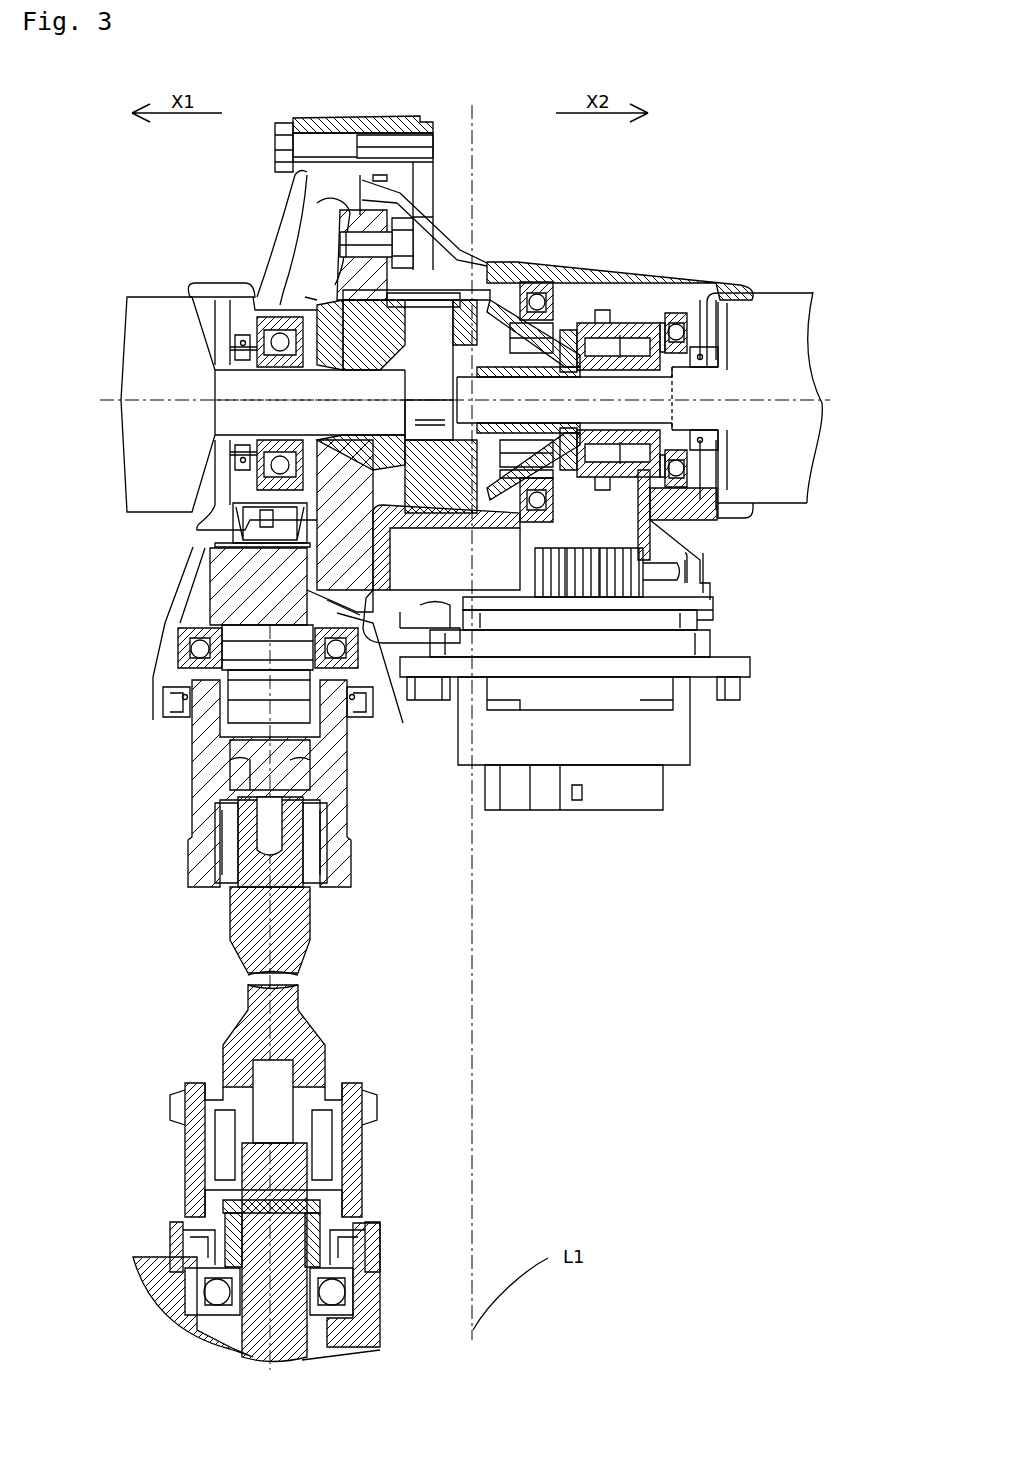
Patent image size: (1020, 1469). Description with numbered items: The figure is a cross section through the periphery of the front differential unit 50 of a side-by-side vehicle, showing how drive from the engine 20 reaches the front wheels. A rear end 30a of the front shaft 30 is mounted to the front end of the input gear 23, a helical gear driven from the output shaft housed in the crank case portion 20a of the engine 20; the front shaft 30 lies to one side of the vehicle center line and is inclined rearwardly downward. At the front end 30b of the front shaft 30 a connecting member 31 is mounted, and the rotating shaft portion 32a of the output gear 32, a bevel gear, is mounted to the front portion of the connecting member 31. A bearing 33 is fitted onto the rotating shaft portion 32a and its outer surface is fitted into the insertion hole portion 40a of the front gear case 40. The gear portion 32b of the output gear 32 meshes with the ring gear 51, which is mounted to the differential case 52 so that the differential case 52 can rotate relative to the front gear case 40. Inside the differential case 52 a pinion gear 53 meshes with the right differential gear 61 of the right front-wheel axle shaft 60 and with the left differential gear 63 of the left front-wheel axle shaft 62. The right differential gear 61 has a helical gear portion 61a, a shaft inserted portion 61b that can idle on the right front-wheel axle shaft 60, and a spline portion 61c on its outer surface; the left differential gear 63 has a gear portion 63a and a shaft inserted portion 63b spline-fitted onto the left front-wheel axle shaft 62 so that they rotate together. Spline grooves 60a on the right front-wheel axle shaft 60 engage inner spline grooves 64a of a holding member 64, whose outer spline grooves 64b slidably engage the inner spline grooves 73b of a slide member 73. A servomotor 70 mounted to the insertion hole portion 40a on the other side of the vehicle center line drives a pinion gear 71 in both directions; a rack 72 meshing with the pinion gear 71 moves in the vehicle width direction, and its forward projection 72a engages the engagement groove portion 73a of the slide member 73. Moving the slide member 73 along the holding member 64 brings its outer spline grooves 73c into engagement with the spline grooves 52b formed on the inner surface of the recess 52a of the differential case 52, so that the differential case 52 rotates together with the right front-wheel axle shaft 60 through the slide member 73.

The engine 20 is at (302, 1252).
The crank case portion 20a is at (380, 1273).
The input gear 23 is at (240, 1214).
The front shaft 30 is at (267, 995).
The rear end of the front shaft 30a is at (362, 1085).
The front end of the front shaft 30b is at (290, 848).
The connecting member 31 is at (208, 757).
The output gear 32 is at (252, 605).
The rotating shaft portion 32a is at (245, 688).
The gear portion 32b is at (218, 570).
The bearing 33 is at (358, 665).
The front gear case 40 is at (252, 290).
The insertion hole portion 40a is at (180, 650).
The front differential unit 50 is at (464, 270).
The ring gear 51 is at (322, 212).
The differential case 52 is at (475, 292).
The recess 52a is at (483, 601).
The spline grooves 52b is at (510, 522).
The pinion gear 53 is at (530, 320).
The right front-wheel axle shaft 60 is at (740, 370).
The spline grooves 60a is at (712, 520).
The right differential gear 61 is at (583, 330).
The gear portion 61a is at (446, 273).
The shaft inserted portion 61b is at (590, 335).
The spline portion 61c is at (520, 510).
The left front-wheel axle shaft 62 is at (240, 380).
The left differential gear 63 is at (340, 290).
The gear portion 63a is at (373, 300).
The shaft inserted portion 63b is at (285, 445).
The holding member 64 is at (723, 410).
The inner spline grooves 64a is at (707, 388).
The outer spline grooves 64b is at (678, 322).
The servomotor 70 is at (650, 730).
The pinion gear 71 is at (680, 750).
The rack 72 is at (700, 655).
The projection 72a is at (660, 560).
The slide member 73 is at (620, 330).
The engagement groove portion 73a is at (705, 545).
The inner spline grooves 73b is at (570, 467).
The outer spline grooves 73c is at (605, 480).